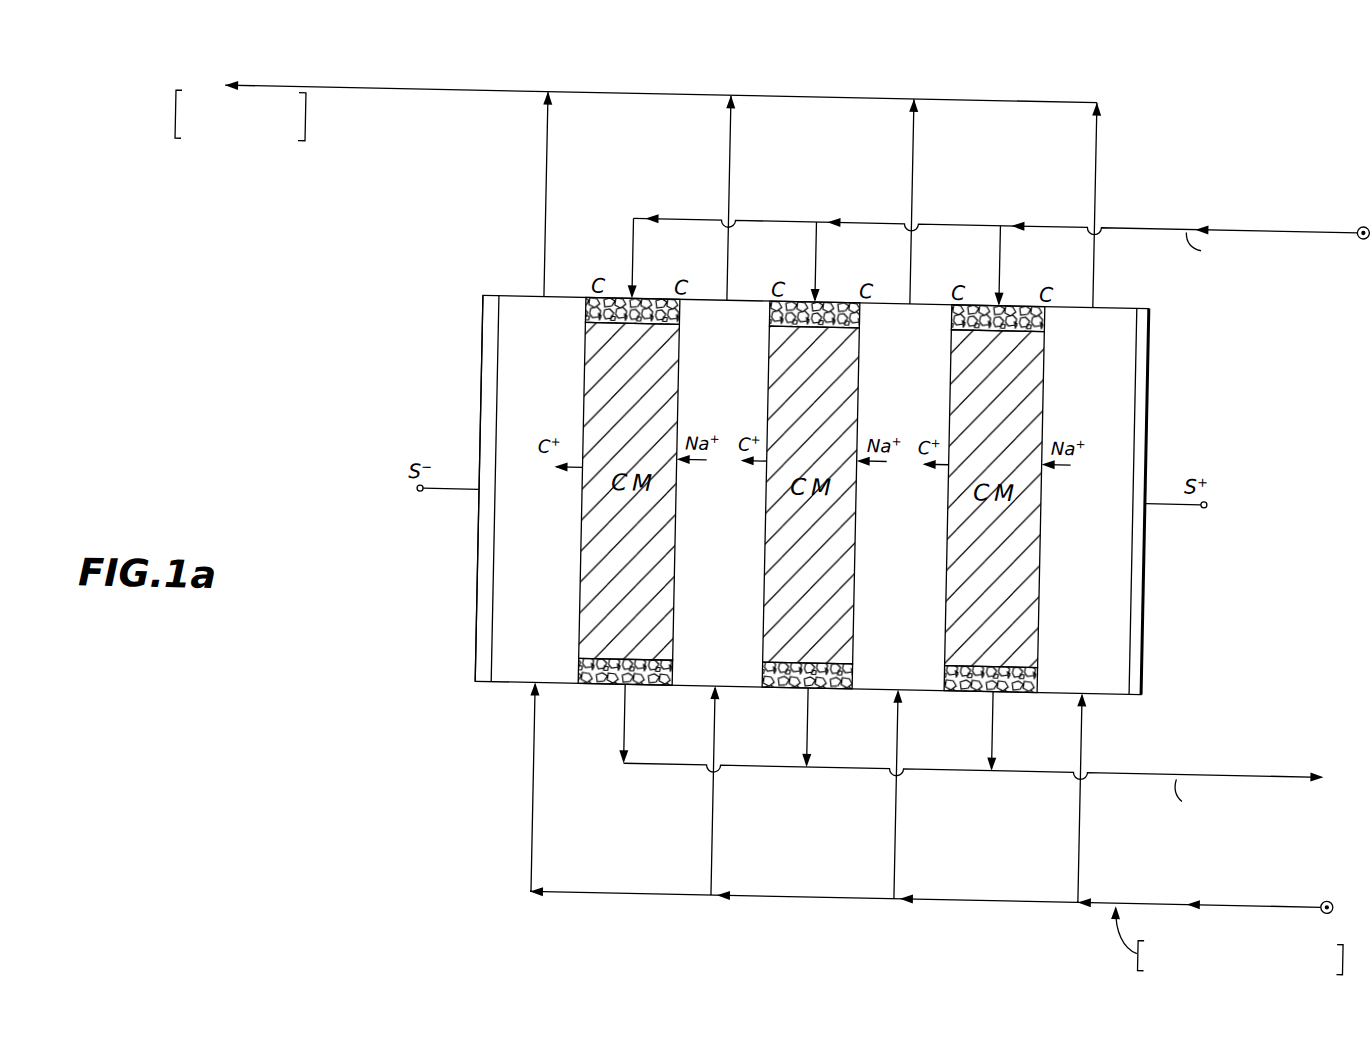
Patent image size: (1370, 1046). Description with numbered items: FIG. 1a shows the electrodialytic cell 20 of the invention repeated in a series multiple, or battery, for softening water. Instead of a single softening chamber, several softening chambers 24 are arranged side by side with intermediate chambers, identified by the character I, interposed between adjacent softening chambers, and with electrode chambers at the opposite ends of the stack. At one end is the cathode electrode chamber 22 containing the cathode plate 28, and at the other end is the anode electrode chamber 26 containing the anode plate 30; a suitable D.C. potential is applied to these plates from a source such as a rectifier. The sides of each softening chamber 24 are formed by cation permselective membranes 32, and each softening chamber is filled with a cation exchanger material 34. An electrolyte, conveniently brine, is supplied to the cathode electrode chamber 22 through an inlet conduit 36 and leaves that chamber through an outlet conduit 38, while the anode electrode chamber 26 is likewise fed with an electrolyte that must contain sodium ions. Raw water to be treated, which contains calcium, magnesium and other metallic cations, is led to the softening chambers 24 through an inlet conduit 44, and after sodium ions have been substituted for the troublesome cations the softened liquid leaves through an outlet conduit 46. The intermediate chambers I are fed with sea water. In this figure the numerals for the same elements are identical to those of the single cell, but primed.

The electrodialytic cell 20 is at (1207, 449).
The cathode electrode chamber 22 is at (507, 619).
The softening chamber 24 is at (643, 690).
The anode electrode chamber 26 is at (1116, 672).
The cathode plate 28 is at (479, 560).
The anode plate 30 is at (1147, 584).
The cation permselective membrane 32 is at (582, 334).
The cation exchanger material 34 is at (666, 615).
The inlet conduit 36 is at (1107, 897).
The outlet conduit 38 is at (447, 96).
The inlet conduit 44 is at (1116, 221).
The outlet conduit 46 is at (1145, 766).